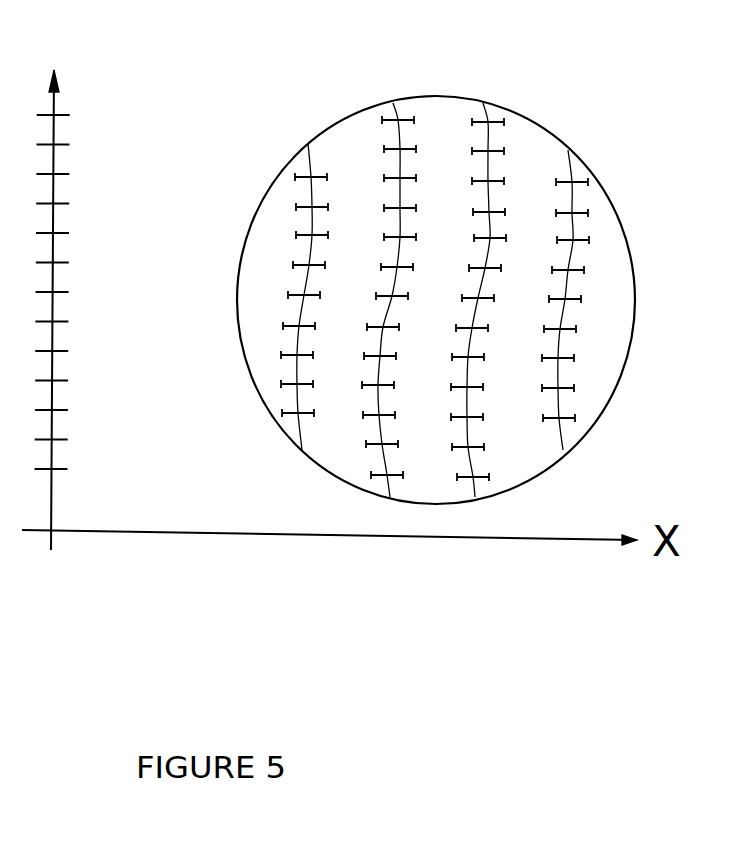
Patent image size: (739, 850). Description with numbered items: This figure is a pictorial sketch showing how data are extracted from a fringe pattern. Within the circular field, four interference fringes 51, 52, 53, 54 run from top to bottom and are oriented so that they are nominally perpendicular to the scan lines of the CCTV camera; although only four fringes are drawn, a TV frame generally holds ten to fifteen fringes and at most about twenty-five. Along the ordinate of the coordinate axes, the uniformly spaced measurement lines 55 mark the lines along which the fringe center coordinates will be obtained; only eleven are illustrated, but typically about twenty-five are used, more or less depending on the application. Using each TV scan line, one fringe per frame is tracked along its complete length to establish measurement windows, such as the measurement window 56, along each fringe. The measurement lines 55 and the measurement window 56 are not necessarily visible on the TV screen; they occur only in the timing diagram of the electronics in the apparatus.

The fringe 51 is at (307, 160).
The fringe 52 is at (396, 130).
The fringe 53 is at (487, 135).
The fringe 54 is at (570, 162).
The measurement lines 55 is at (62, 114).
The measurement window 56 is at (586, 190).